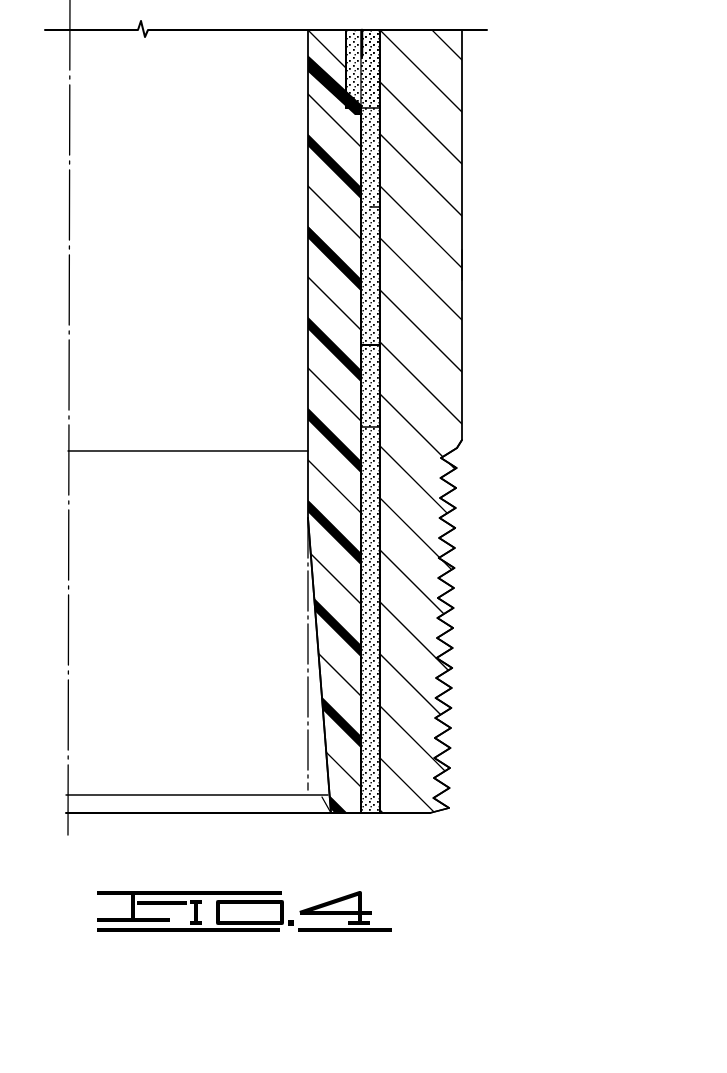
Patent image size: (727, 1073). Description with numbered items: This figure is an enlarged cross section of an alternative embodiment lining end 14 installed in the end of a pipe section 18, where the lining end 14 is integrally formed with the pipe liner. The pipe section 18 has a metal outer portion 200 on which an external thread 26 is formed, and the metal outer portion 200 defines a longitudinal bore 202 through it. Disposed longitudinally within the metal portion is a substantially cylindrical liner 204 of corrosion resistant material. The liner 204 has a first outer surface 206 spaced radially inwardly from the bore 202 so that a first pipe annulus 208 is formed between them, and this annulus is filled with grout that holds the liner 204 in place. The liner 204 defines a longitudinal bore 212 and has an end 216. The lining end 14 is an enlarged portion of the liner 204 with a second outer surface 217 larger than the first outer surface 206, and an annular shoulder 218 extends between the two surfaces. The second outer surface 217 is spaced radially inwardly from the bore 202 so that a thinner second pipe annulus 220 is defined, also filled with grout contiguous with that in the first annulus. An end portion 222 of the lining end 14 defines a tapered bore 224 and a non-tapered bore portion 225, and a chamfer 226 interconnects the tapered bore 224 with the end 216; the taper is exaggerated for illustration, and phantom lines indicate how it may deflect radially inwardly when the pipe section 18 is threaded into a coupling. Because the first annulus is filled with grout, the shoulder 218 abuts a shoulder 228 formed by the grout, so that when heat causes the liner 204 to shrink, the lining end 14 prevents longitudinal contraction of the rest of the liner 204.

The metal outer portion 200 is at (430, 108).
The longitudinal bore 202 is at (373, 161).
The liner 204 is at (332, 70).
The first outer surface 206 is at (348, 53).
The first pipe annulus 208 is at (382, 71).
The longitudinal bore 212 is at (358, 22).
The end 216 is at (350, 816).
The second outer surface 217 is at (380, 345).
The annular shoulder 218 is at (346, 99).
The second pipe annulus 220 is at (380, 211).
The end portion 222 is at (330, 549).
The tapered bore 224 is at (308, 688).
The non-tapered bore portion 225 is at (307, 196).
The chamfer 226 is at (330, 806).
The shoulder 228 is at (352, 108).
The lining end 14 is at (385, 427).
The pipe section 18 is at (528, 267).
The external thread 26 is at (445, 679).